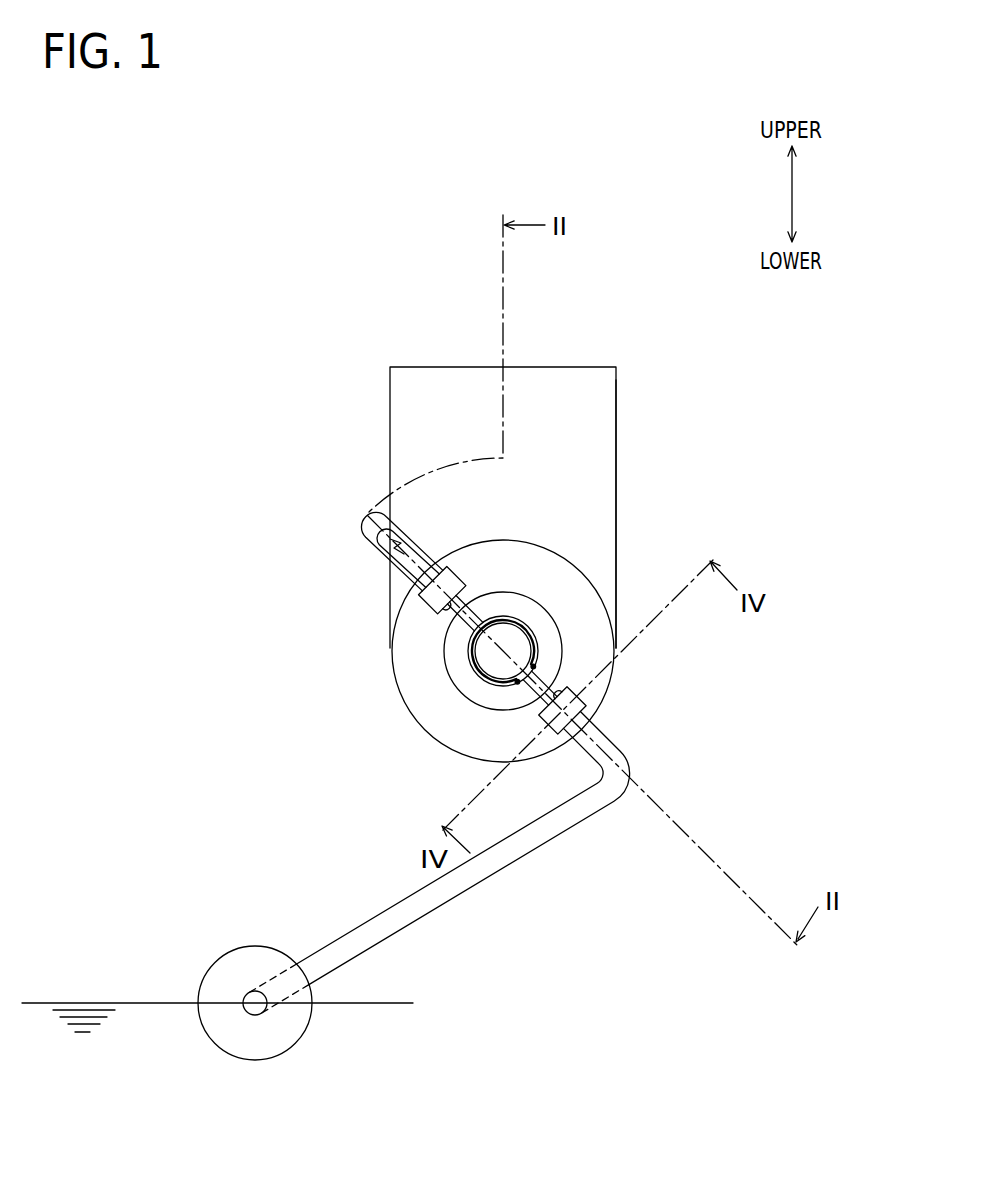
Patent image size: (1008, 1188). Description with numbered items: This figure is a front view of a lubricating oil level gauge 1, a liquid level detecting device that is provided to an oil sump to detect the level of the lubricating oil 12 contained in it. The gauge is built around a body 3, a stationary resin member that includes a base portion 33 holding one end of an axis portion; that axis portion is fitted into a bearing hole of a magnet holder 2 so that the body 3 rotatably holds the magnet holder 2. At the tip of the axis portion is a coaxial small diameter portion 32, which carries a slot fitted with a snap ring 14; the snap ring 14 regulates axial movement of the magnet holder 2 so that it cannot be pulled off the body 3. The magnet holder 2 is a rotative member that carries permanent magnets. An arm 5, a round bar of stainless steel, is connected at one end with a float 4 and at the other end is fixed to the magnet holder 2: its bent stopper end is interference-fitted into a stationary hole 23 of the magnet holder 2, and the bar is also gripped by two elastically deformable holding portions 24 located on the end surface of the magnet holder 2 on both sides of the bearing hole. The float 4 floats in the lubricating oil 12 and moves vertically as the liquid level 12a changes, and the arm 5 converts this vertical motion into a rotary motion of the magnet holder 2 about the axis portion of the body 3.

The lubricating oil level gauge 1 is at (191, 206).
The magnet holder 2 is at (381, 687).
The body 3 is at (379, 454).
The base portion 33 is at (583, 482).
The small diameter portion 32 is at (488, 657).
The snap ring 14 is at (480, 676).
The stationary hole 23 is at (368, 531).
The holding portions 24 is at (432, 611).
The arm 5 is at (312, 941).
The float 4 is at (222, 950).
The lubricating oil 12 is at (163, 1050).
The liquid level 12a is at (61, 1003).